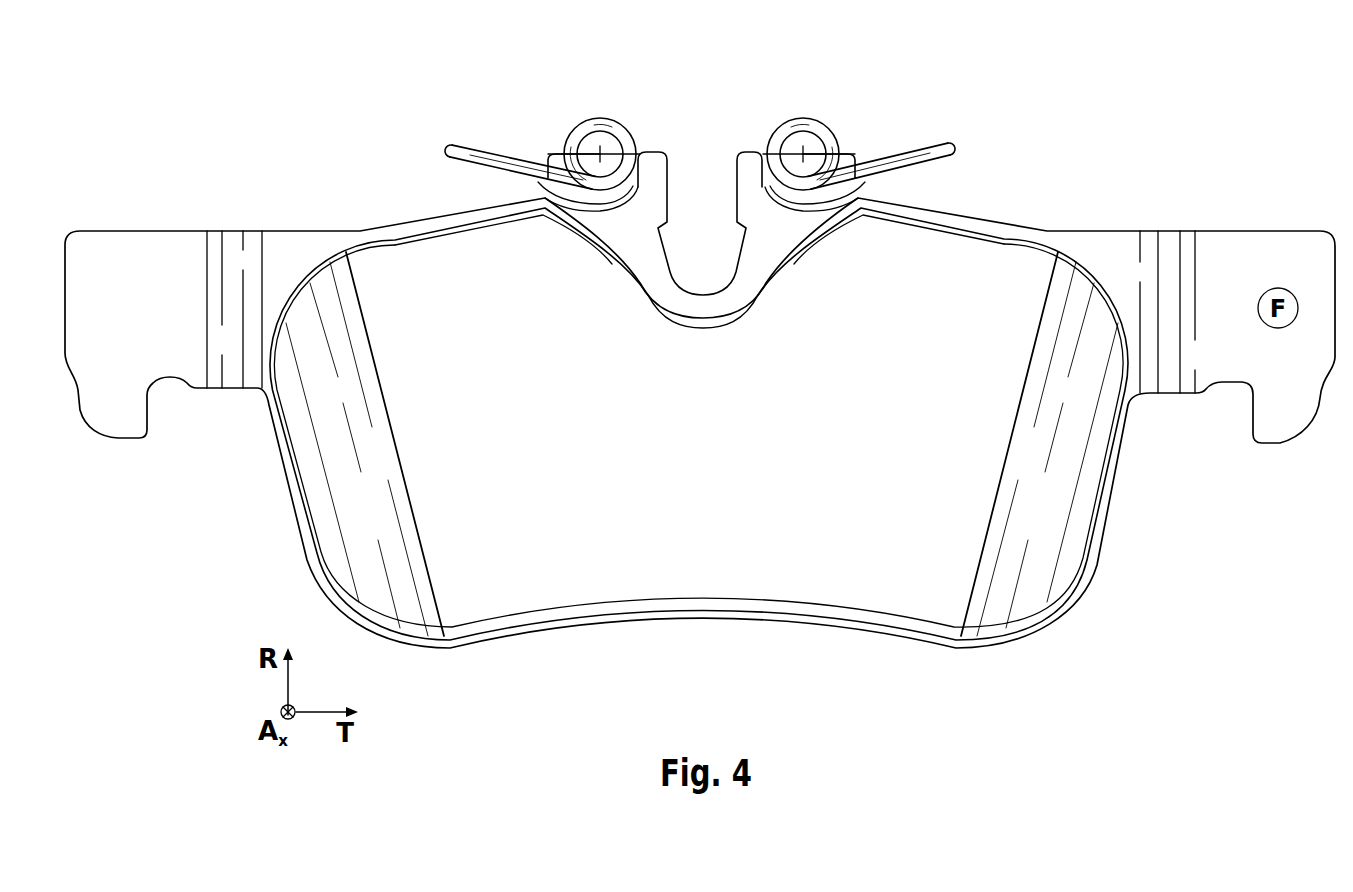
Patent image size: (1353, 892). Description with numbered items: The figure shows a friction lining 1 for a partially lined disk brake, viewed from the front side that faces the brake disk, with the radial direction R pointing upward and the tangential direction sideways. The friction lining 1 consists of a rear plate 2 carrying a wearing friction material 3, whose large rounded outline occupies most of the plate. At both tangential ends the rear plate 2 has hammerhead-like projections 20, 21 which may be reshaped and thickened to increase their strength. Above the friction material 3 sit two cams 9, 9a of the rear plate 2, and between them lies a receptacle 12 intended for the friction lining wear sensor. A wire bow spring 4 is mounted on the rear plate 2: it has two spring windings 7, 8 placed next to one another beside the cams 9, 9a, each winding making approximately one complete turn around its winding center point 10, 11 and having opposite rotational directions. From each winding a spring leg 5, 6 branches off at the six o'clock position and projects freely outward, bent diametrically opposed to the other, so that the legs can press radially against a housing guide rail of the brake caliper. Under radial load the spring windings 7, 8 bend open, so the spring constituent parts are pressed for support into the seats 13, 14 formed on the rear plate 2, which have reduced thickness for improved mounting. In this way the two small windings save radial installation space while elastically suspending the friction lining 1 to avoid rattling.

The friction lining 1 is at (284, 141).
The rear plate 2 is at (320, 242).
The friction material 3 is at (703, 579).
The wire bow spring 4 is at (445, 142).
The spring leg 5 is at (948, 145).
The spring leg 6 is at (458, 146).
The spring winding 7 is at (800, 121).
The spring winding 8 is at (603, 118).
The cam 9 is at (548, 158).
The cam 9a is at (855, 160).
The winding center point 10 is at (813, 152).
The winding center point 11 is at (603, 152).
The receptacle 12 is at (679, 271).
The seat 13 is at (778, 158).
The seat 14 is at (580, 162).
The projection 20 is at (1168, 368).
The projection 21 is at (235, 363).